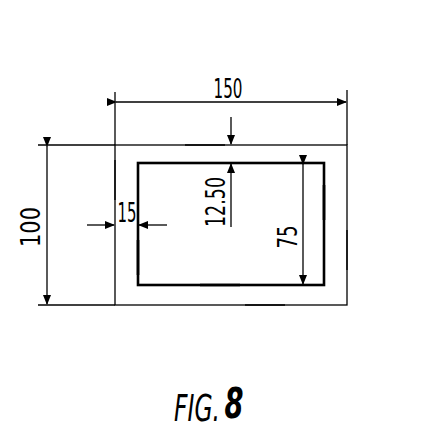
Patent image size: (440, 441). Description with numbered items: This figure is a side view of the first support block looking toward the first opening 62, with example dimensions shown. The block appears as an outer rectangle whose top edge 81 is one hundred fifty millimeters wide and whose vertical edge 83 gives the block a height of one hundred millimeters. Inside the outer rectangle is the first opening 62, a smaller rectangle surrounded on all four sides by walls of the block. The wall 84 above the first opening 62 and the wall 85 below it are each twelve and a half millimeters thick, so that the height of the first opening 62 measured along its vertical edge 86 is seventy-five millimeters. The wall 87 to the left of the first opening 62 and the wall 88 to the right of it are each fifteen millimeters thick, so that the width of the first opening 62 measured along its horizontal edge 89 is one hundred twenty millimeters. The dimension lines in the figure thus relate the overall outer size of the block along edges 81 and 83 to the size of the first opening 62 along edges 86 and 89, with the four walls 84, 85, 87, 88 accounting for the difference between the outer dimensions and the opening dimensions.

The edge 81 is at (310, 145).
The first opening 62 is at (182, 260).
The edge 83 is at (115, 185).
The wall 84 is at (203, 153).
The wall 85 is at (264, 292).
The edge 86 is at (324, 203).
The wall 87 is at (124, 253).
The wall 88 is at (313, 249).
The edge 89 is at (218, 293).